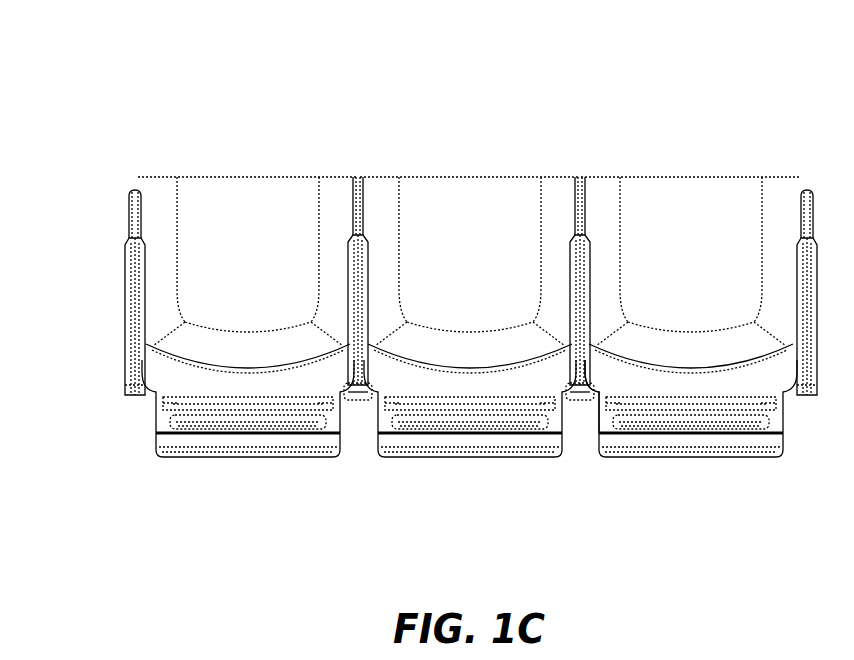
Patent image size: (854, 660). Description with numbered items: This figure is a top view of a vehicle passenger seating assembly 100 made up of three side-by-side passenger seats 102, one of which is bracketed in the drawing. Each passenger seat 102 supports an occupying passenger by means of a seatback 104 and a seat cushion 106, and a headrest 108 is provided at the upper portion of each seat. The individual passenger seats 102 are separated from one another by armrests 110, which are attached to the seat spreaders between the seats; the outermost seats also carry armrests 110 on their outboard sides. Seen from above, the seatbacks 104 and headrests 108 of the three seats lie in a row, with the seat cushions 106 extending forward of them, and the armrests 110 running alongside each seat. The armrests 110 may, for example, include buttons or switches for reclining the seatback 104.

The passenger seating assembly 100 is at (84, 65).
The passenger seat 102 is at (579, 145).
The seatback 104 is at (660, 445).
The seat cushion 106 is at (248, 271).
The headrest 108 is at (259, 464).
The armrest 110 is at (357, 303).